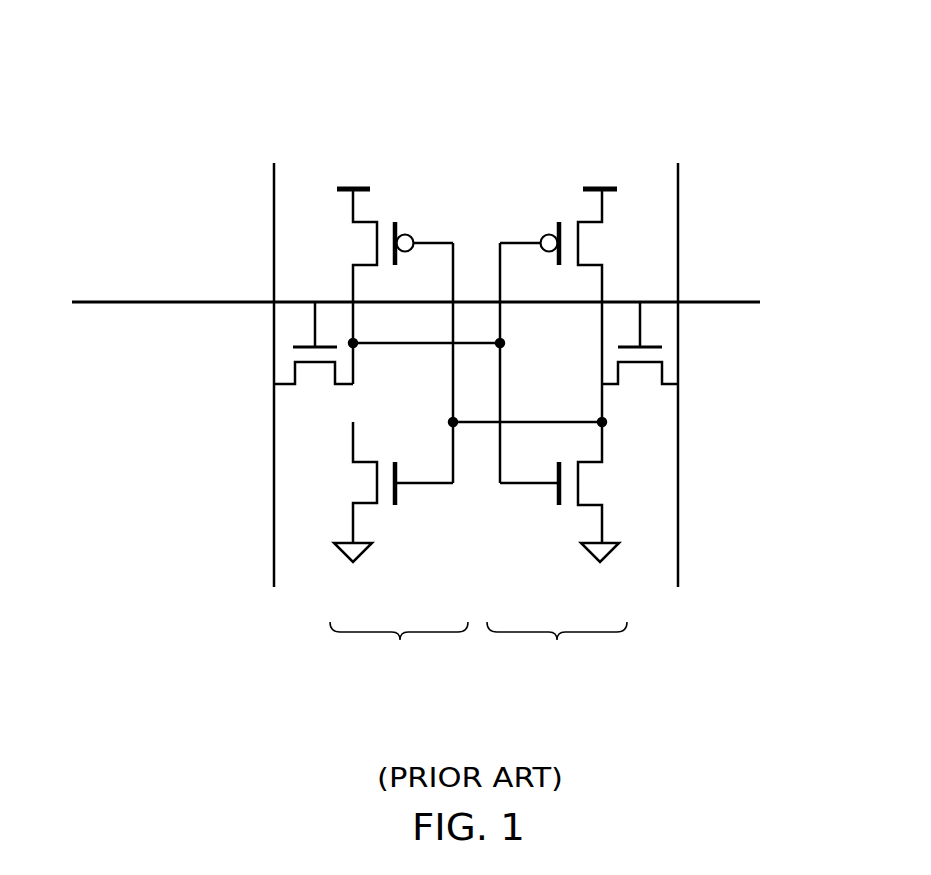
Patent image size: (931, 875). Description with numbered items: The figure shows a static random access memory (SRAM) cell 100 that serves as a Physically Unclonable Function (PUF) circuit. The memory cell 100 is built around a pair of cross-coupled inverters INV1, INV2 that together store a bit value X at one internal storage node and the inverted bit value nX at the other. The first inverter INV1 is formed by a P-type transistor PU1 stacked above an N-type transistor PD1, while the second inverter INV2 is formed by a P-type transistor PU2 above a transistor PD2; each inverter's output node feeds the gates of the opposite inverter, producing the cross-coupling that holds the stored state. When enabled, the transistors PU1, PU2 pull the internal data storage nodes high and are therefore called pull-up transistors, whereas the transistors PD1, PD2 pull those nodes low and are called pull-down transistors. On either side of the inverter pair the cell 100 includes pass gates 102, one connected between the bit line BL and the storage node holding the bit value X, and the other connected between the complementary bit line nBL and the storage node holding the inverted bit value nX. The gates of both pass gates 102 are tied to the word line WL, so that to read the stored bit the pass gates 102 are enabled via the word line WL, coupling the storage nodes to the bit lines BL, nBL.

The static random access memory cell 100 is at (703, 92).
The pass gates 102 is at (292, 384).
The P-type transistor PU1 is at (397, 232).
The P-type transistor PU2 is at (558, 232).
The N-type transistor PD1 is at (397, 497).
The N-type transistor PD2 is at (558, 497).
The bit value X is at (356, 342).
The inverted bit value nX is at (605, 423).
The word line WL is at (416, 286).
The bit line BL is at (276, 393).
The bit line nBL is at (685, 392).
The inverter INV1 is at (399, 651).
The inverter INV2 is at (557, 651).